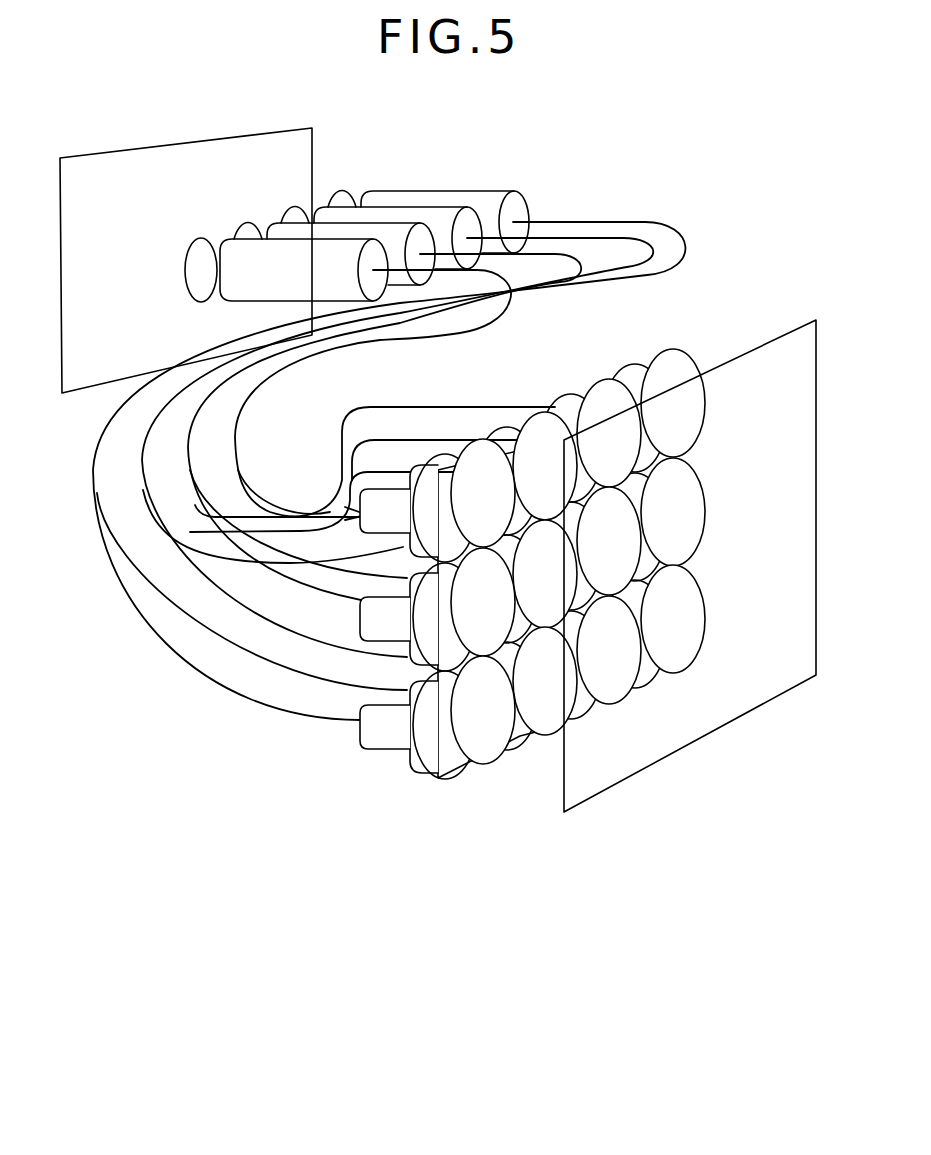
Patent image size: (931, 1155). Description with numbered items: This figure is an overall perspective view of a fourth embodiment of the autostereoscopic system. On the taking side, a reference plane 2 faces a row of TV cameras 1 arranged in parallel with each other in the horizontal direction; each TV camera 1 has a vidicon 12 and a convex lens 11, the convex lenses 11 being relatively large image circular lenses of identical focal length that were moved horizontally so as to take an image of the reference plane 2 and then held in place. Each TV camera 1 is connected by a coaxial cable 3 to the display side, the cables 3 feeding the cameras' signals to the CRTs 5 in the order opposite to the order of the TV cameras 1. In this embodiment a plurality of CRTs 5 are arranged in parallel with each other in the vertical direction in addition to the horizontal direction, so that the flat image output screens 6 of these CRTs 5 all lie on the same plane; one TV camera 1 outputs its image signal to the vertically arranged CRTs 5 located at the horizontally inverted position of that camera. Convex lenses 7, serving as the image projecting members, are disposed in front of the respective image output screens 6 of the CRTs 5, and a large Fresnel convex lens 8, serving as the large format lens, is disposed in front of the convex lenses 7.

The TV camera 1 is at (398, 203).
The reference plane 2 is at (112, 182).
The coaxial cable 3 is at (95, 545).
The CRT 5 is at (368, 748).
The image output screen 6 is at (447, 782).
The convex lens 7 is at (495, 750).
The Fresnel convex lens 8 is at (745, 390).
The convex lens 11 is at (345, 197).
The vidicon 12 is at (503, 192).